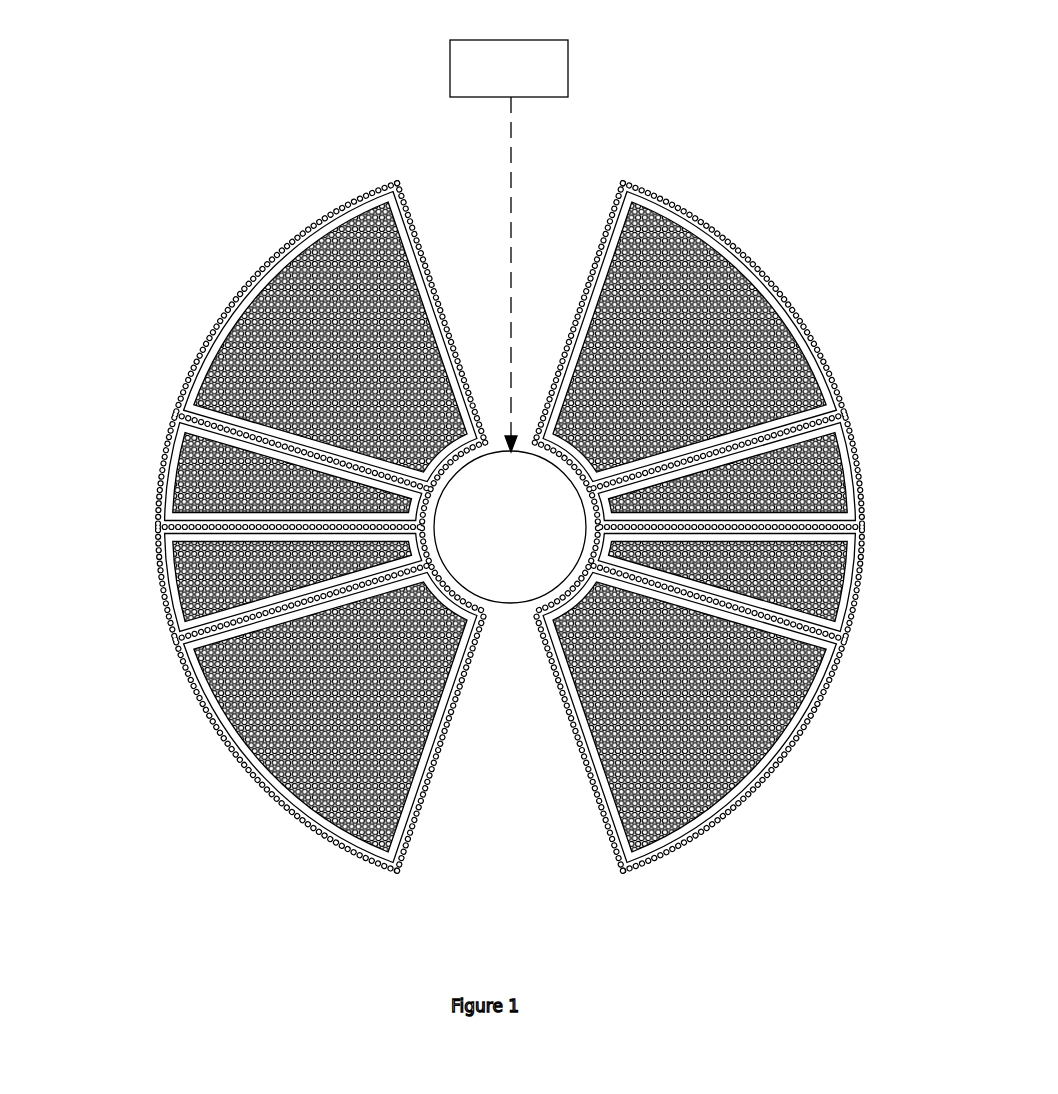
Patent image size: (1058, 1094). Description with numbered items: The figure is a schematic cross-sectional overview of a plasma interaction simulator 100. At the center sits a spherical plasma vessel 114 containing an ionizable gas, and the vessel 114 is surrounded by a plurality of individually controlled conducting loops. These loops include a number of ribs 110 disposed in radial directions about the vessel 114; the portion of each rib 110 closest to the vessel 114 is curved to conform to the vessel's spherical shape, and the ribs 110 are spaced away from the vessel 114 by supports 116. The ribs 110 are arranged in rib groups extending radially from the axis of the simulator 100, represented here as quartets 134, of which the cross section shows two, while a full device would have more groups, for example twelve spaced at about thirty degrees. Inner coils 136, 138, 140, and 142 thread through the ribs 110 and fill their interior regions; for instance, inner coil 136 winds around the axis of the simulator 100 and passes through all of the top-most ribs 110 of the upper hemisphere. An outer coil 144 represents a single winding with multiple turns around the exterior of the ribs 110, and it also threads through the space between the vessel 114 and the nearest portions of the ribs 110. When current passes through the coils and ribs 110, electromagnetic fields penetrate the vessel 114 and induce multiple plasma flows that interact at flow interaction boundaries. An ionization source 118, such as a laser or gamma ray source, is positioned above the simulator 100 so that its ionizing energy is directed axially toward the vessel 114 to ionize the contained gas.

The simulator 100 is at (216, 233).
The ribs 110 is at (607, 827).
The plasma vessel 114 is at (510, 527).
The support 116 is at (515, 702).
The ionization source 118 is at (572, 44).
The quartets 134 is at (488, 529).
The inner coil 136 is at (724, 172).
The inner coil 138 is at (188, 457).
The inner coil 140 is at (843, 600).
The inner coil 142 is at (280, 800).
The outer coil 144 is at (663, 938).